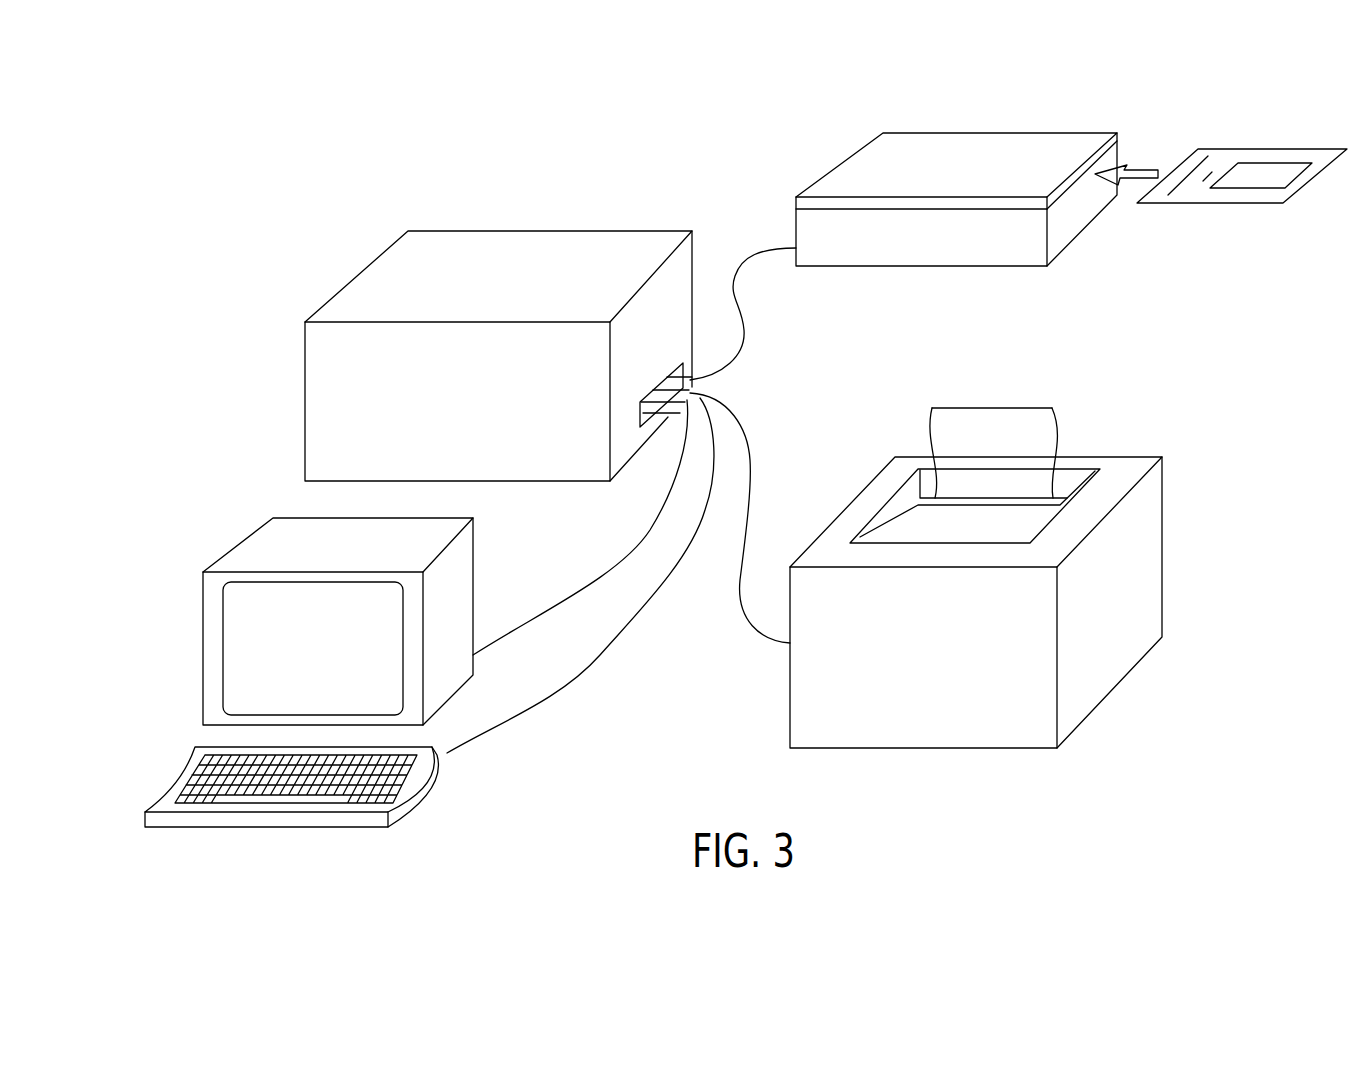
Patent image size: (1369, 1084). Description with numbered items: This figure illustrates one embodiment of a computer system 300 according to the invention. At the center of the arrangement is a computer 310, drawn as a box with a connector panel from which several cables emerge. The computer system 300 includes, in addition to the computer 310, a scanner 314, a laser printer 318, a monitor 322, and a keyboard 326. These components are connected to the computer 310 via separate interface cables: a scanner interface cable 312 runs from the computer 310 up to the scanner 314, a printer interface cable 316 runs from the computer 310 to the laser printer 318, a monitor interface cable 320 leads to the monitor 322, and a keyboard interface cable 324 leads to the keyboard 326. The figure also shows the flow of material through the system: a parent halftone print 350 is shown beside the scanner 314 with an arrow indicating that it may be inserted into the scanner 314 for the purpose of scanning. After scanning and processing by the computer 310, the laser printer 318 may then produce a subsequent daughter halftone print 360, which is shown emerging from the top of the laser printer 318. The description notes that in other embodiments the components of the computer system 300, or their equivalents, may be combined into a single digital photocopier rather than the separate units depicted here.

The computer system 300 is at (238, 154).
The computer 310 is at (536, 231).
The scanner interface cable 312 is at (748, 318).
The scanner 314 is at (937, 267).
The printer interface cable 316 is at (751, 456).
The laser printer 318 is at (1163, 535).
The monitor interface cable 320 is at (614, 560).
The monitor 322 is at (203, 635).
The keyboard interface cable 324 is at (617, 634).
The keyboard 326 is at (168, 797).
The parent halftone print 350 is at (1210, 203).
The daughter halftone print 360 is at (1060, 424).